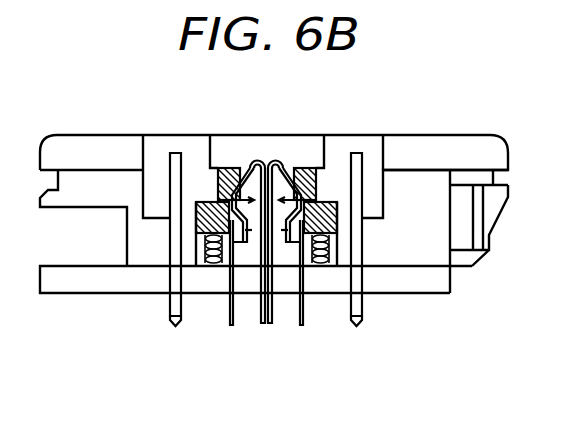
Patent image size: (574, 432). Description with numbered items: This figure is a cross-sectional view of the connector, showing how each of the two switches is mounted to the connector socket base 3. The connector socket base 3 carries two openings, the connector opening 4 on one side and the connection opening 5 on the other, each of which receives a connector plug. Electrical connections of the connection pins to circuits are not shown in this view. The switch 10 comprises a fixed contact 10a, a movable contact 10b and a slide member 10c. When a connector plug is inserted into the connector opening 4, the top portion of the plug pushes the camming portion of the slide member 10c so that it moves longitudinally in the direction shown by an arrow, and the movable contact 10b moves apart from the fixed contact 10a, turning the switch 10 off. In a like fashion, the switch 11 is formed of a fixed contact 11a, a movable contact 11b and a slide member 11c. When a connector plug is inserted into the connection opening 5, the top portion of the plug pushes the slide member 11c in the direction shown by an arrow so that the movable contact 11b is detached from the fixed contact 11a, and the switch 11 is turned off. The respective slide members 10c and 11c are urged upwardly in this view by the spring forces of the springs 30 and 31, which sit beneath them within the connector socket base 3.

The connector socket base 3 is at (478, 135).
The connector opening 4 is at (144, 167).
The connection opening 5 is at (386, 168).
The switch 10 is at (250, 409).
The fixed contact 10a is at (244, 243).
The movable contact 10b is at (260, 266).
The slide member 10c is at (236, 167).
The switch 11 is at (360, 409).
The fixed contact 11a is at (291, 243).
The movable contact 11b is at (275, 267).
The slide member 11c is at (300, 168).
The spring 30 is at (210, 268).
The spring 31 is at (326, 268).